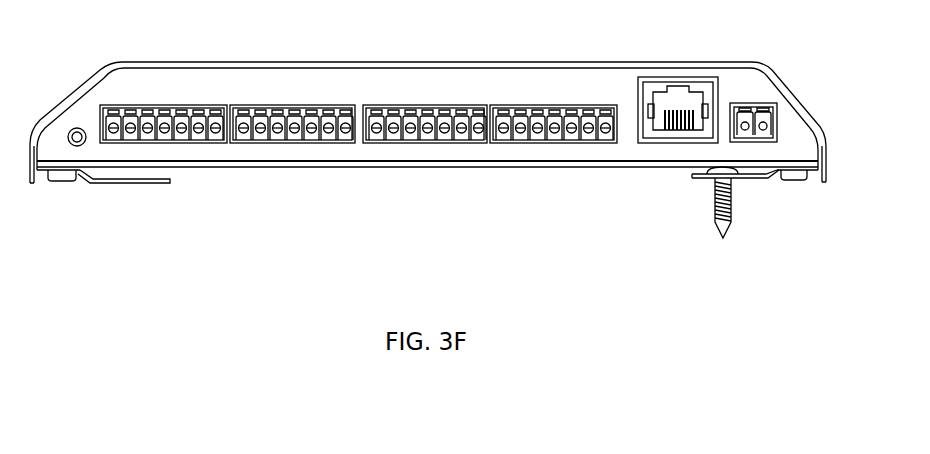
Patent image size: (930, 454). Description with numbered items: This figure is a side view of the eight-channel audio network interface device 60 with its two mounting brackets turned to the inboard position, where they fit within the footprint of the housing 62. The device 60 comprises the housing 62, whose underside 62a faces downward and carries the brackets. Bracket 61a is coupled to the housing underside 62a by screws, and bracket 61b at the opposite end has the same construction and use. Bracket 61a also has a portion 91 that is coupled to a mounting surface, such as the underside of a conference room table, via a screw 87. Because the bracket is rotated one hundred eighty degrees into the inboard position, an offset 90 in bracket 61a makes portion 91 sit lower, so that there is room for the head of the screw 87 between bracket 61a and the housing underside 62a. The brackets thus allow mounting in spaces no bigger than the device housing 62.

The audio network interface device 60 is at (423, 44).
The housing 62 is at (82, 80).
The underside of housing 62a is at (505, 168).
The bracket 61b is at (121, 184).
The device mounting bracket 61a is at (710, 181).
The offset 90 is at (768, 179).
The portion 91 is at (690, 178).
The screw 87 is at (733, 226).